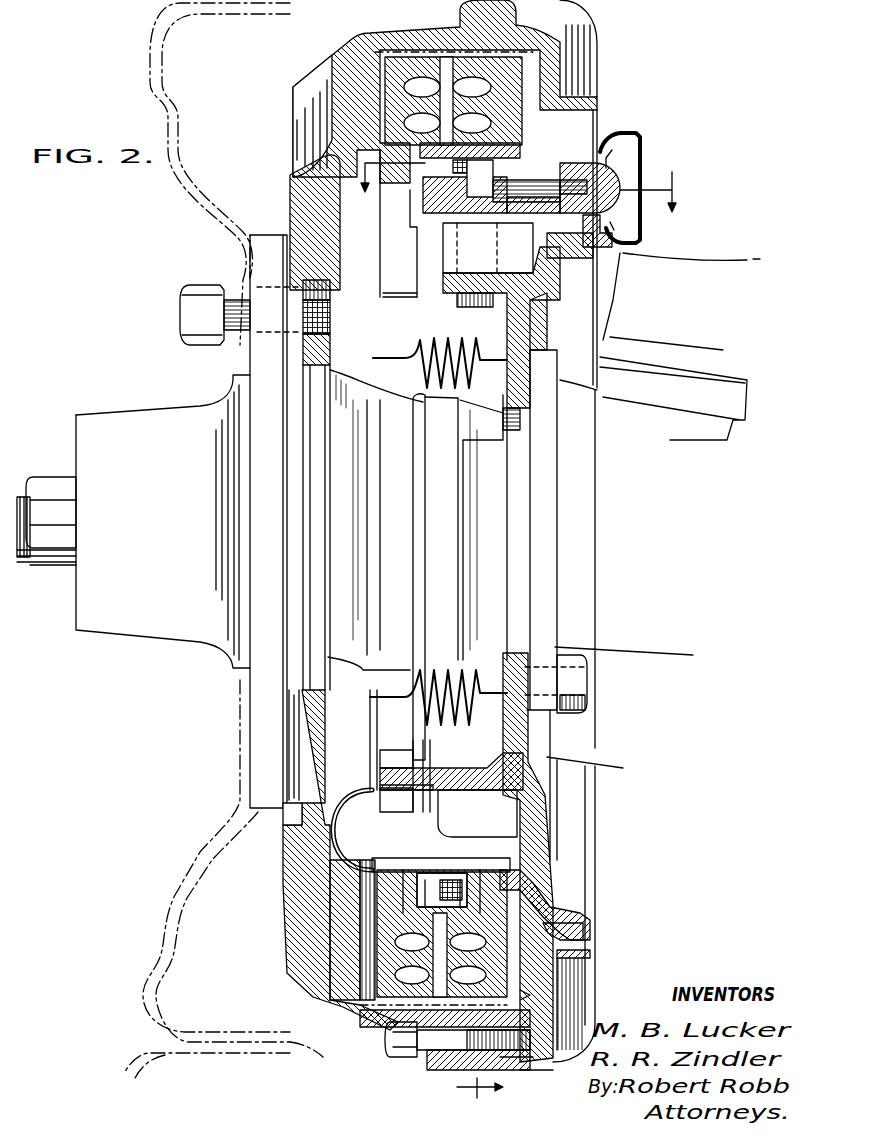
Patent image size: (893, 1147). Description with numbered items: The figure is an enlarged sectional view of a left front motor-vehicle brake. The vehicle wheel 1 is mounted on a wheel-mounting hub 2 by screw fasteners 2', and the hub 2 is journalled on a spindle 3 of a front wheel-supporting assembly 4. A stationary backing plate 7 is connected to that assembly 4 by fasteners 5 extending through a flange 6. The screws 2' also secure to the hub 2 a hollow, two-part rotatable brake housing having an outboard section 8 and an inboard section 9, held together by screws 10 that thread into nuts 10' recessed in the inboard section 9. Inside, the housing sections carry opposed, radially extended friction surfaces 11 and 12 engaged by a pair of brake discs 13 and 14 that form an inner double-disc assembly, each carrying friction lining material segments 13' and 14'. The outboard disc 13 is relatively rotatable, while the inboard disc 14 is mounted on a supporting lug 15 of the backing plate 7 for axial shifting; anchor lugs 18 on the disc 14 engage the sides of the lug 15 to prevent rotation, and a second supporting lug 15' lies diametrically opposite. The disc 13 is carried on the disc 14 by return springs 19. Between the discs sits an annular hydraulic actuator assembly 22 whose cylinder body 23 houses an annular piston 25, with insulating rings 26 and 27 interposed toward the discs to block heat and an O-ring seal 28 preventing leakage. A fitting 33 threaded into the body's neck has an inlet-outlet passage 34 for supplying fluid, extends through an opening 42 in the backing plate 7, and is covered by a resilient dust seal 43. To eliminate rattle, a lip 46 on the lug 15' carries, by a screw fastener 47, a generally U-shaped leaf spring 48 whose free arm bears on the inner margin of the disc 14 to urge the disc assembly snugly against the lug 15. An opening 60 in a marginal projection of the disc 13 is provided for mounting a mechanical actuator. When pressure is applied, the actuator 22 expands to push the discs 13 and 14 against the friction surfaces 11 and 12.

The vehicle wheel 1 is at (195, 194).
The wheel-mounting hub 2 is at (187, 521).
The screw fasteners 2' is at (242, 303).
The spindle 3 is at (20, 562).
The front wheel-supporting assembly 4 is at (705, 268).
The fasteners 5 is at (577, 683).
The flange 6 is at (571, 598).
The backing plate 7 is at (545, 291).
The outboard section 8 is at (302, 975).
The inboard section 9 is at (590, 976).
The screws 10 is at (455, 1057).
The nuts 10' is at (493, 1092).
The friction surface 11 is at (362, 993).
The friction surface 12 is at (530, 995).
The brake disc 13 is at (356, 961).
The friction lining material segments 13' is at (310, 930).
The brake disc 14 is at (594, 949).
The friction lining material segments 14' is at (594, 924).
The supporting lug 15 is at (488, 265).
The second supporting lug 15' is at (477, 813).
The anchor lugs 18 is at (473, 300).
The return springs 19 is at (413, 396).
The hydraulic actuator assembly 22 is at (473, 213).
The cylinder body 23 is at (438, 872).
The piston 25 is at (420, 870).
The insulating ring 26 is at (540, 872).
The insulating ring 27 is at (387, 187).
The seal 28 is at (462, 870).
The fitting 33 is at (622, 170).
The inlet-outlet passage 34 is at (538, 200).
The opening 42 is at (602, 226).
The dust seal 43 is at (640, 130).
The lip 46 is at (372, 777).
The screw fastener 47 is at (390, 745).
The leaf spring 48 is at (337, 840).
The opening 60 is at (417, 273).